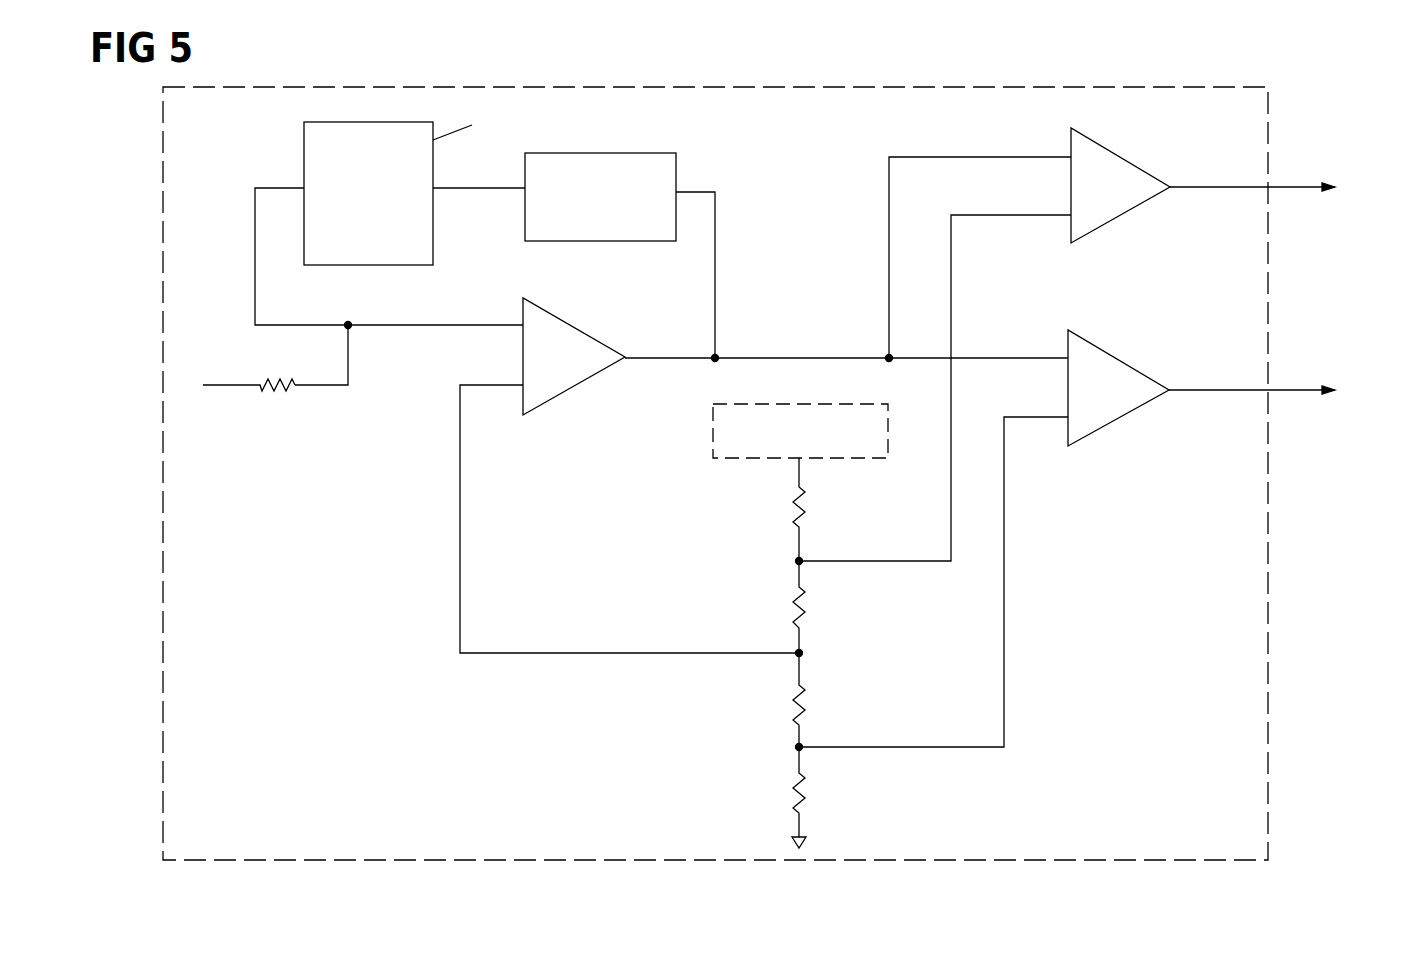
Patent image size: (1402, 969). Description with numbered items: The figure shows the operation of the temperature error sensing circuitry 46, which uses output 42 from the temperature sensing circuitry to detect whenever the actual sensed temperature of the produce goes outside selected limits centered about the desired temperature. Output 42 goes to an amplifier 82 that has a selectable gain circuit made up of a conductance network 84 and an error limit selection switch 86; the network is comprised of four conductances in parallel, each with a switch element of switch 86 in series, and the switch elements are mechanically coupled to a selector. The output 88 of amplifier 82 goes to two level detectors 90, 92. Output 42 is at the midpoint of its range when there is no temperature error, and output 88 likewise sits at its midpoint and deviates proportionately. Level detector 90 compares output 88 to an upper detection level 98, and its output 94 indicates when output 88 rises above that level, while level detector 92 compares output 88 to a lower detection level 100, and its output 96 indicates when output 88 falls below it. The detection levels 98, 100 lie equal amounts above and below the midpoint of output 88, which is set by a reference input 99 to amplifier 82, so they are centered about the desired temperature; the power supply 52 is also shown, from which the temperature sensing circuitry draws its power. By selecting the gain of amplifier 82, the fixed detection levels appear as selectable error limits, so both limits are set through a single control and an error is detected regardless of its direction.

The output 42 is at (228, 387).
The temperature error sensing circuitry 46 is at (1268, 630).
The power supply 52 is at (713, 457).
The amplifier 82 is at (575, 396).
The conductance network 84 is at (597, 153).
The error limit selection switch 86 is at (389, 221).
The output 88 is at (747, 356).
The level detector 90 is at (1120, 218).
The level detector 92 is at (1120, 422).
The output 94 is at (1178, 190).
The output 96 is at (1177, 394).
The upper detection level 98 is at (1062, 213).
The reference input 99 is at (490, 385).
The lower detection level 100 is at (1059, 415).